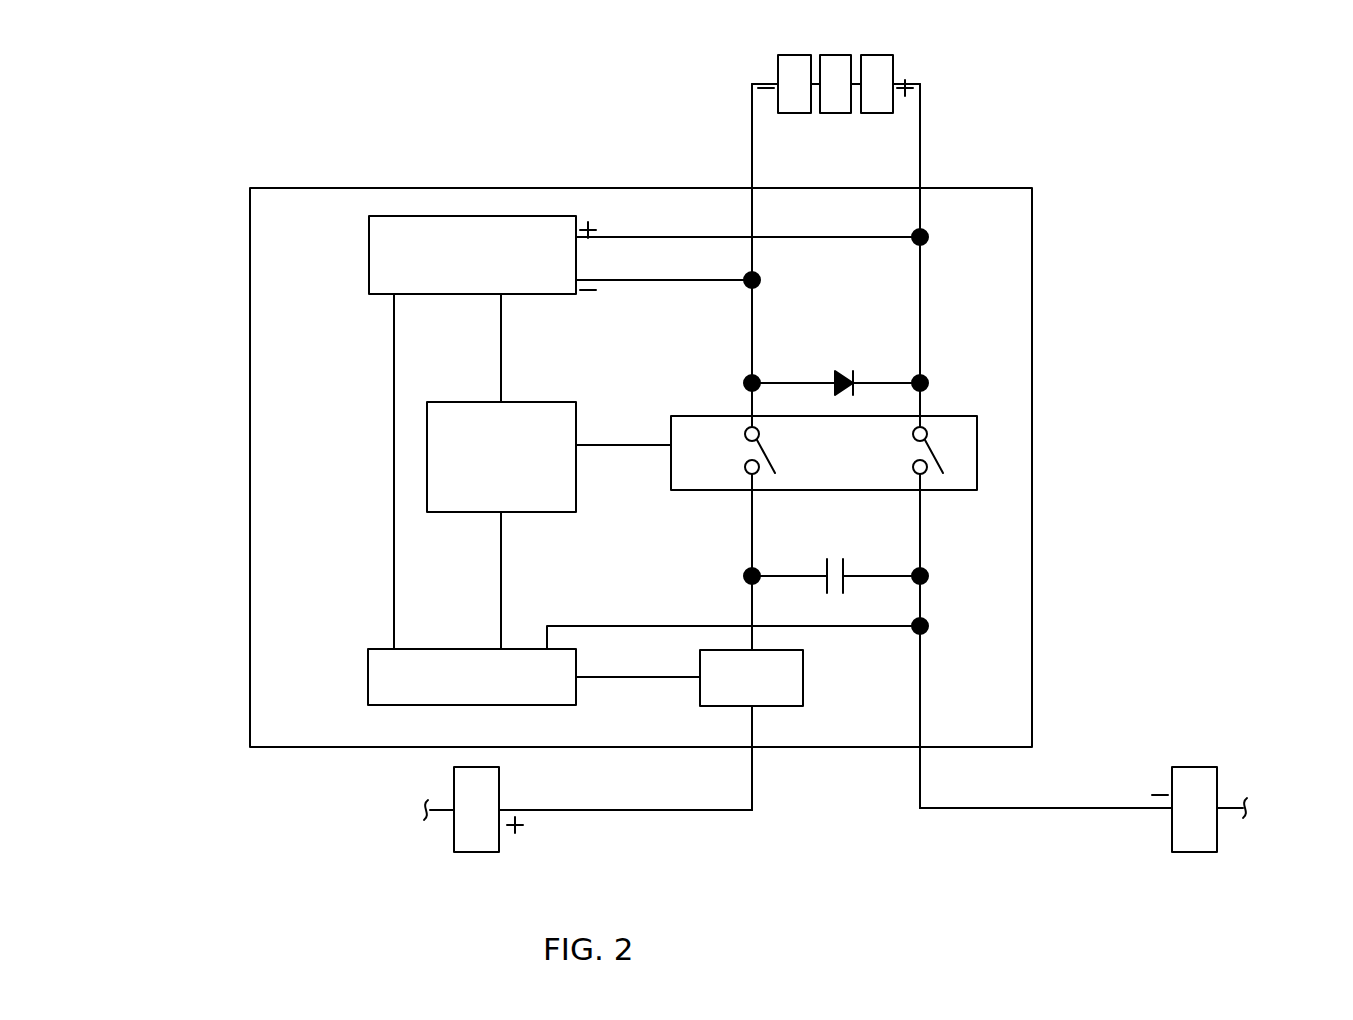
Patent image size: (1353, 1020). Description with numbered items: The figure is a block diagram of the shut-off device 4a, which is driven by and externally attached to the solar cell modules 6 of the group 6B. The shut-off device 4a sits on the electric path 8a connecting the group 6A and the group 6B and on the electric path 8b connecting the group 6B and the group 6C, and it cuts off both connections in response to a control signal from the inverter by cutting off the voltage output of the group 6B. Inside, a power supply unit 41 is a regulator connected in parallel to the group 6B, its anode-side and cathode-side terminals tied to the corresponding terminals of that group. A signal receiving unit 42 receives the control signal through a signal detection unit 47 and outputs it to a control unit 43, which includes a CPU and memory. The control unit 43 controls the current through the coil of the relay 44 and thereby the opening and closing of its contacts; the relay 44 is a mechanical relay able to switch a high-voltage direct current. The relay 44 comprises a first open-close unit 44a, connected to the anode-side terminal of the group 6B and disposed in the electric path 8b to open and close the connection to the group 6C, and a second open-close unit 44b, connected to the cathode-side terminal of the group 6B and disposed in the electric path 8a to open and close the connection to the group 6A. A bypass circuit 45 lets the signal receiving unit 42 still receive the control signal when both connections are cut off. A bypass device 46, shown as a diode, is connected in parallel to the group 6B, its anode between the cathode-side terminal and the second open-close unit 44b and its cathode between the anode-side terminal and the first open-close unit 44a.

The shut-off device 4a is at (1012, 178).
The solar cell module 6 is at (796, 113).
The group 6A is at (452, 790).
The group 6B is at (905, 67).
The group 6C is at (1228, 760).
The electric path 8a is at (608, 810).
The electric path 8b is at (1065, 808).
The power supply unit 41 is at (369, 257).
The signal receiving unit 42 is at (368, 683).
The control unit 43 is at (427, 418).
The relay 44 is at (904, 475).
The first open-close unit 44a is at (938, 450).
The second open-close unit 44b is at (745, 470).
The bypass circuit 45 is at (865, 574).
The bypass device 46 is at (838, 375).
The signal detection unit 47 is at (789, 706).